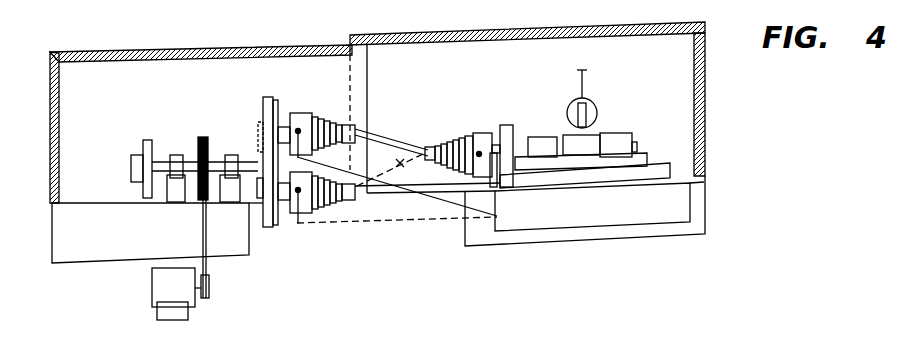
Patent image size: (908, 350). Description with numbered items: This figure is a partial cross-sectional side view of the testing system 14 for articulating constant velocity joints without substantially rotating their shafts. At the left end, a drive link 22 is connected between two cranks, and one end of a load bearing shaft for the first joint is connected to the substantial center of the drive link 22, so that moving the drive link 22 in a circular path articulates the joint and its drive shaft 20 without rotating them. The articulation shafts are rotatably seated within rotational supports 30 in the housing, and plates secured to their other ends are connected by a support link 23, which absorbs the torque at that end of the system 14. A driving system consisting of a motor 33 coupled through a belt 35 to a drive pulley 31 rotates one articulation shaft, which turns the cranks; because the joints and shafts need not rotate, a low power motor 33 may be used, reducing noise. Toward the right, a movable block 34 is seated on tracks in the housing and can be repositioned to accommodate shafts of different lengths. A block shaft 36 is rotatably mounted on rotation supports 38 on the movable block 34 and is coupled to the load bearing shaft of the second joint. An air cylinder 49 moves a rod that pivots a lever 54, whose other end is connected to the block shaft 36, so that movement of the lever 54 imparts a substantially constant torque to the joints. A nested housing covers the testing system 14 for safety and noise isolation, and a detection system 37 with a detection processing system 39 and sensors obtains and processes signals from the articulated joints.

The testing system 14 is at (730, 112).
The drive shaft 20 is at (393, 142).
The drive link 22 is at (268, 105).
The support link 23 is at (140, 178).
The rotational supports 30 is at (177, 190).
The drive pulley 31 is at (198, 143).
The motor 33 is at (152, 292).
The movable block 34 is at (658, 172).
The belt 35 is at (208, 268).
The block shaft 36 is at (521, 148).
The detection system 37 is at (530, 230).
The rotation supports 38 is at (543, 148).
The detection processing system 39 is at (584, 28).
The air cylinder 49 is at (573, 100).
The lever 54 is at (586, 153).